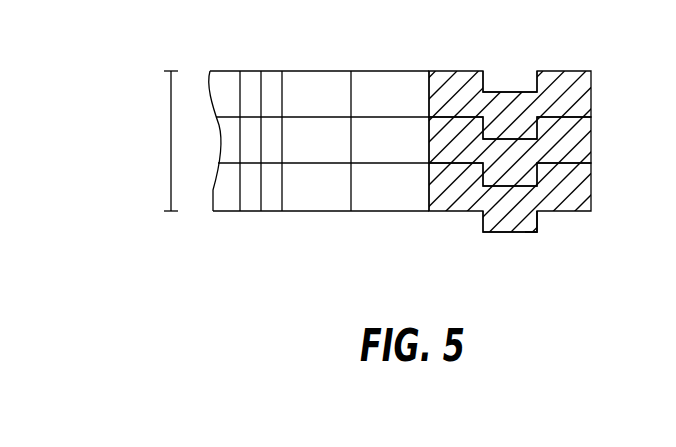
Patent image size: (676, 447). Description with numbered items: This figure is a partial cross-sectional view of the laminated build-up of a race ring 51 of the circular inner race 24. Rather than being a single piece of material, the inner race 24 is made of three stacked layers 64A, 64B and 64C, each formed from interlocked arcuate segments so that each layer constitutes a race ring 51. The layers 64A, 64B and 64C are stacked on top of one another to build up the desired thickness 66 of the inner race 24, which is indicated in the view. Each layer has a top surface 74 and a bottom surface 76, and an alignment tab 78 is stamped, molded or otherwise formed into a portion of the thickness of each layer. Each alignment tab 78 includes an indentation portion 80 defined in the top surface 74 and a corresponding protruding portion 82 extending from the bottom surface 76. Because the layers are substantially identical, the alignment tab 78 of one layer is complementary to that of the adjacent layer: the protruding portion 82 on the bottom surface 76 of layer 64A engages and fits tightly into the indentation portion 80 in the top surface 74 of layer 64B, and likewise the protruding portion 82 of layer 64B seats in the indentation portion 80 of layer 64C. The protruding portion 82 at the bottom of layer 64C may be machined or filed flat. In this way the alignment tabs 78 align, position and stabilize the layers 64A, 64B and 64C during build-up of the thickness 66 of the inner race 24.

The race ring 51 is at (203, 60).
The inner race 24 is at (603, 60).
The top surface 74 is at (380, 68).
The bottom surface 76 is at (380, 213).
The thickness 66 is at (170, 150).
The indentation portion 80 is at (511, 91).
The alignment tab 78 is at (510, 233).
The protruding portion 82 is at (539, 223).
The layer 64A is at (583, 92).
The layer 64B is at (583, 141).
The layer 64C is at (583, 191).